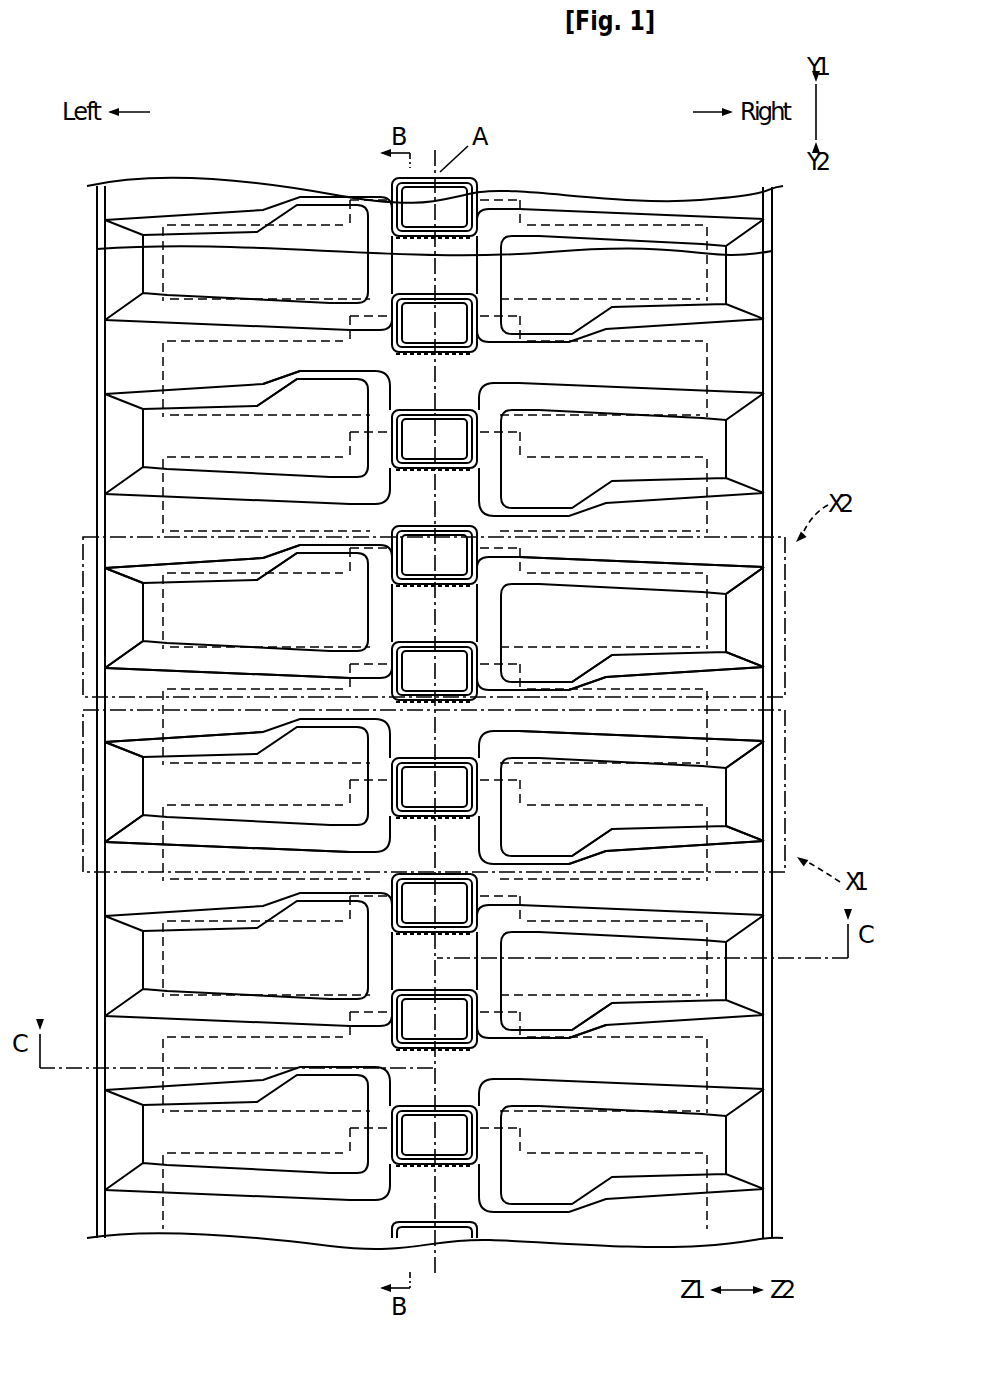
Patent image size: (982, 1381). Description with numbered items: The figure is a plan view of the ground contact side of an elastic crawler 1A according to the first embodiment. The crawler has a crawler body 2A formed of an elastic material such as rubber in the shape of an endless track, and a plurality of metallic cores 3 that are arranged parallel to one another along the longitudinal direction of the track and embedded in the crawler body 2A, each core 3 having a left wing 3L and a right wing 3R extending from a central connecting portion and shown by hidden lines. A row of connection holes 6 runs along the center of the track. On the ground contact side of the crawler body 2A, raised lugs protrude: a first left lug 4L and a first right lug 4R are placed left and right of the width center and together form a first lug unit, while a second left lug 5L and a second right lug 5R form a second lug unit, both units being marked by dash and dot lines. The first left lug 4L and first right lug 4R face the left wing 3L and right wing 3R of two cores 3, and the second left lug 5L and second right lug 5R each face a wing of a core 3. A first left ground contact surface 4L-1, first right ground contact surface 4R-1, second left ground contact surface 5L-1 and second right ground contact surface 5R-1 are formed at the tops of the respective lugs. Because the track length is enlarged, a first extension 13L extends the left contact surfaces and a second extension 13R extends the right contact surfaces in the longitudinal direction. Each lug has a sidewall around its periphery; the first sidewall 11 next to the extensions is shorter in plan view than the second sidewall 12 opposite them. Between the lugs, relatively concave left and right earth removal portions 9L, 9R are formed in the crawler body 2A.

The elastic crawler 1A is at (613, 113).
The crawler body 2A is at (800, 248).
The core 3 is at (437, 704).
The left wing 3L is at (100, 572).
The right wing 3R is at (793, 573).
The first left lug 4L is at (183, 785).
The first left ground contact surface 4L-1 is at (157, 796).
The first right lug 4R is at (687, 785).
The first right ground contact surface 4R-1 is at (711, 796).
The second left lug 5L is at (187, 608).
The second left ground contact surface 5L-1 is at (157, 617).
The second right lug 5R is at (669, 610).
The second right ground contact surface 5R-1 is at (683, 622).
The connection hole 6 is at (447, 318).
The left earth removal portion 9L is at (147, 888).
The right earth removal portion 9R is at (725, 898).
The first sidewall 11 is at (197, 655).
The second sidewall 12 is at (197, 567).
The first extension 13L is at (300, 553).
The second extension 13R is at (640, 662).